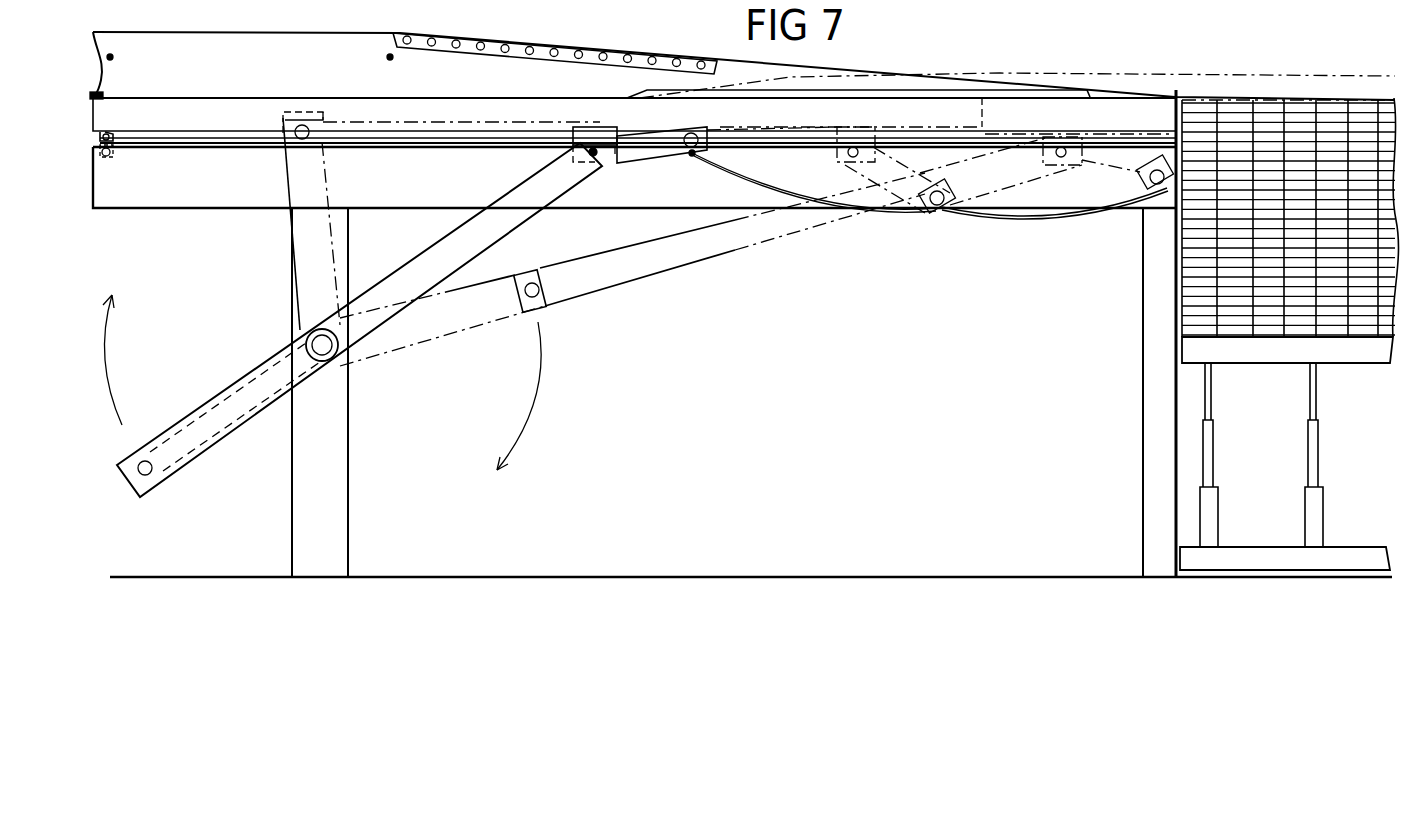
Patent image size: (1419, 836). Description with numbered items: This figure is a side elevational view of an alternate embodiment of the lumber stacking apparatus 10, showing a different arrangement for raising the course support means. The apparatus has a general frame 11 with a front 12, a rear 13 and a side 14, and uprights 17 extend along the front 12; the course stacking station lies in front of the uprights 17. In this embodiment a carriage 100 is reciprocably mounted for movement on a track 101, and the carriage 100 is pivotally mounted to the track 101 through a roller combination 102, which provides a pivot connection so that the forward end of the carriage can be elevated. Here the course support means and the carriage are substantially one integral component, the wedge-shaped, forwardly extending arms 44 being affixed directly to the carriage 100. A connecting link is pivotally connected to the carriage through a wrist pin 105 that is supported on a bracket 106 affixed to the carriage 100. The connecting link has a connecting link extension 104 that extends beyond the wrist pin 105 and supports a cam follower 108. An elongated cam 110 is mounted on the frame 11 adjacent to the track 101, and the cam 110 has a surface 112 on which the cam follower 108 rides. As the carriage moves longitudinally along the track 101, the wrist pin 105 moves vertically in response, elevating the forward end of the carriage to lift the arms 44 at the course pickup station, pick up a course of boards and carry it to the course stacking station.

The lumber stacking apparatus 10 is at (912, 72).
The arms 44 is at (797, 93).
The carriage 100 is at (304, 85).
The track 101 is at (155, 148).
The roller combination 102 is at (108, 135).
The frame 11 is at (233, 210).
The front 12 is at (1148, 283).
The rear 13 is at (297, 457).
The side 14 is at (302, 495).
The uprights 17 is at (1148, 334).
The connecting link extension 104 is at (660, 117).
The wrist pin 105 is at (603, 153).
The bracket 106 is at (587, 127).
The cam follower 108 is at (692, 153).
The elongated cam 110 is at (912, 216).
The cam surface 112 is at (765, 184).